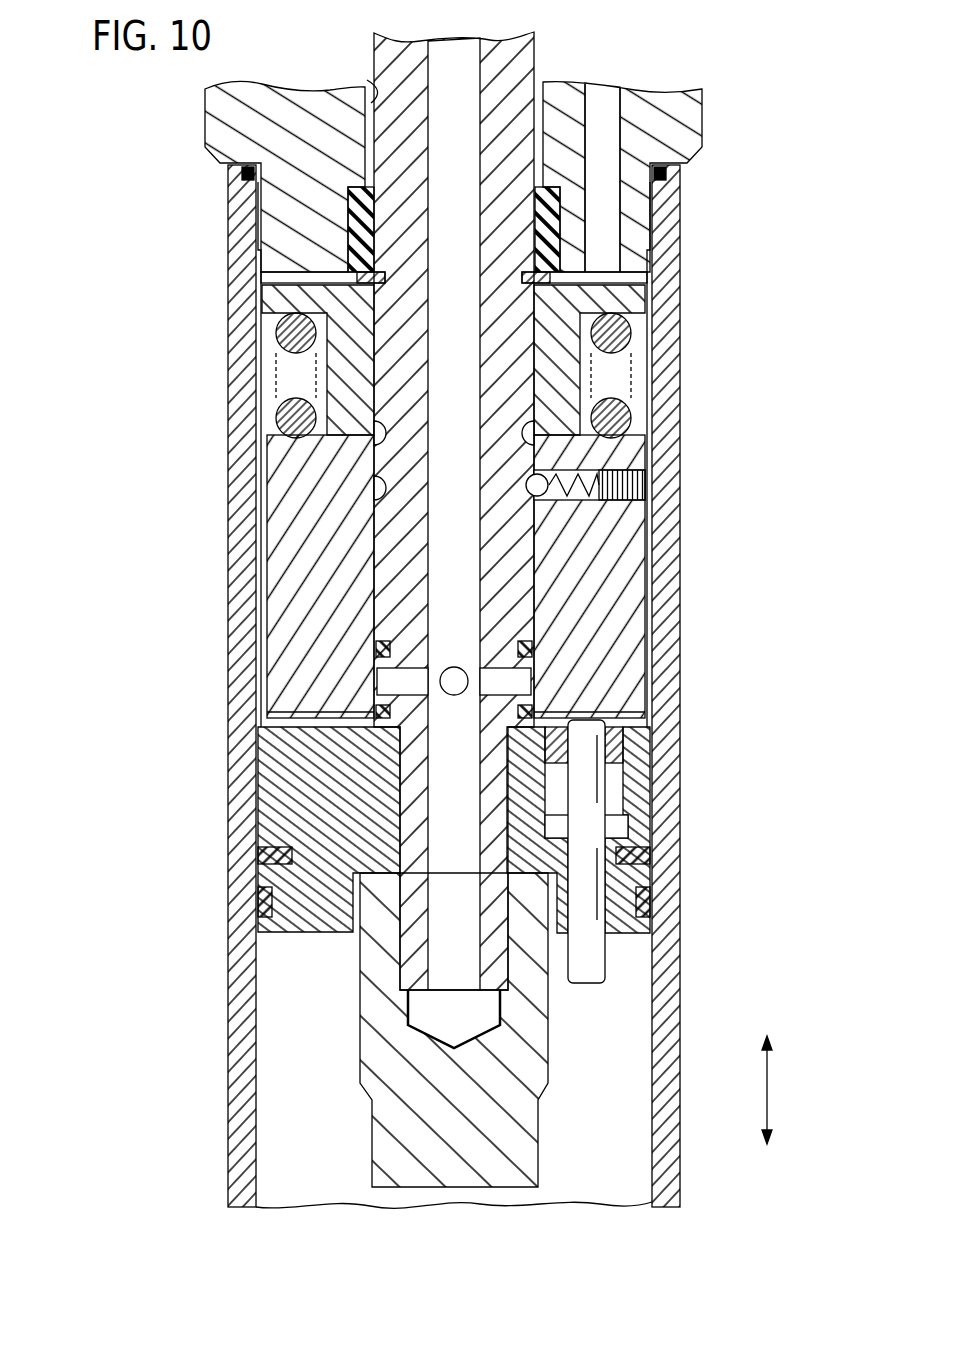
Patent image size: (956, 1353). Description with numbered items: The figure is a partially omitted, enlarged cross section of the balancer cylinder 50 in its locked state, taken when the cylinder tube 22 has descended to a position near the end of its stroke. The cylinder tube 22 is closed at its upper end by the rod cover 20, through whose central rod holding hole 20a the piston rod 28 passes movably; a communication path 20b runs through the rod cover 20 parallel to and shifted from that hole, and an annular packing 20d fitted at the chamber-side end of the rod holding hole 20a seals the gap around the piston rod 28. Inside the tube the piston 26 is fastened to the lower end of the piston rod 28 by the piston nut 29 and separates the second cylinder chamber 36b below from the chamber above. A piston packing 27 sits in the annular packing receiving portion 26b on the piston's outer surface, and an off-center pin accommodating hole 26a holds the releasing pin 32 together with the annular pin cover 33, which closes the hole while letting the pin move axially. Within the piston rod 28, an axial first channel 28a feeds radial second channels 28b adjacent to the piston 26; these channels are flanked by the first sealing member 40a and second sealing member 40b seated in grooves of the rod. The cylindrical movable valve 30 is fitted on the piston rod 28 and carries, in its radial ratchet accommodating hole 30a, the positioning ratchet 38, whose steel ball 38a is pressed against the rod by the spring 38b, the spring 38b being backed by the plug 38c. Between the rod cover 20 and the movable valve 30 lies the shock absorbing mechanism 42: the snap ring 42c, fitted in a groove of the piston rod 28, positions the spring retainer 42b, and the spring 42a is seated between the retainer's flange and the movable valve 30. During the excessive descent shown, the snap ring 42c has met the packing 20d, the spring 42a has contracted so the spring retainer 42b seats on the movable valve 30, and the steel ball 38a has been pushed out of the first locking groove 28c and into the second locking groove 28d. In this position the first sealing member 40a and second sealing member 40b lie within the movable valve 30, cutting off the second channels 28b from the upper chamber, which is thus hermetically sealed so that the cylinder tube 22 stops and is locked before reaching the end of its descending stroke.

The balancer cylinder 50 is at (678, 44).
The rod cover 20 is at (461, 157).
The rod holding hole 20a is at (372, 80).
The communication path 20b is at (606, 100).
The packing 20d is at (360, 242).
The cylinder tube 22 is at (245, 1143).
The piston 26 is at (461, 846).
The pin accommodating hole 26a is at (632, 792).
The packing receiving portion 26b is at (647, 858).
The piston packing 27 is at (645, 843).
The piston rod 28 is at (371, 496).
The first channel 28a is at (451, 48).
The second channels 28b is at (385, 683).
The first locking groove 28c is at (372, 432).
The second locking groove 28d is at (370, 487).
The piston nut 29 is at (530, 1124).
The movable valve 30 is at (463, 576).
The ratchet accommodating hole 30a is at (588, 497).
The releasing pin 32 is at (588, 905).
The pin cover 33 is at (625, 737).
The second cylinder chamber 36b is at (290, 1000).
The positioning ratchet 38 is at (654, 464).
The steel ball 38a is at (546, 473).
The spring 38b is at (566, 488).
The plug 38c is at (672, 492).
The first sealing member 40a is at (378, 648).
The second sealing member 40b is at (378, 711).
The shock absorbing mechanism 42 is at (391, 350).
The spring 42a is at (290, 402).
The spring retainer 42b is at (270, 300).
The snap ring 42c is at (370, 279).